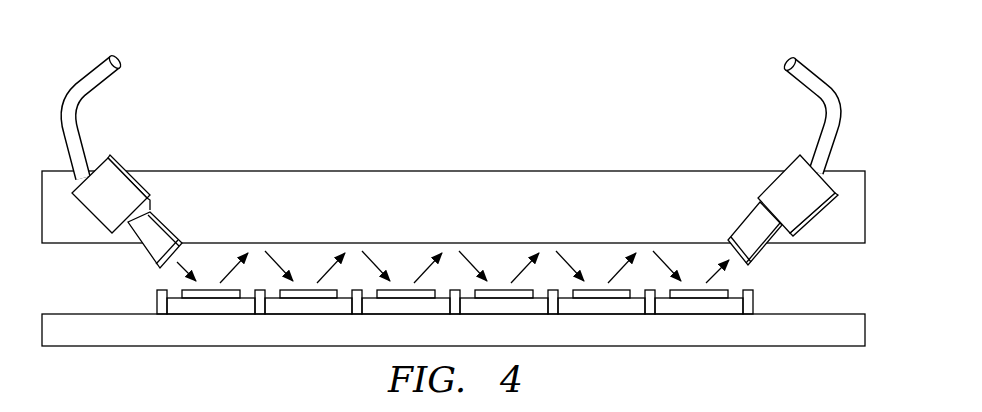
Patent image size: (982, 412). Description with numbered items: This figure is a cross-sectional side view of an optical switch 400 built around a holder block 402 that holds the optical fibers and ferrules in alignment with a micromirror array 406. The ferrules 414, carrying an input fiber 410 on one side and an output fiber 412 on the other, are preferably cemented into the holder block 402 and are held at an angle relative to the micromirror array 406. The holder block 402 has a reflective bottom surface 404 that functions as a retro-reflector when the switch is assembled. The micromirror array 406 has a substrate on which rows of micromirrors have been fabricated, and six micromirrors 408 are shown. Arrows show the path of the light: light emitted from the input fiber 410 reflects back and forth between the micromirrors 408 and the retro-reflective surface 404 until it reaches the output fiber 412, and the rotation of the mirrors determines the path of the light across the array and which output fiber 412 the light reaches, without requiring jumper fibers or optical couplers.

The optical switch 400 is at (453, 207).
The holder block 402 is at (453, 176).
The reflective bottom surface 404 is at (321, 244).
The micromirror array 406 is at (197, 338).
The micromirrors 408 is at (453, 240).
The input fiber 410 is at (88, 85).
The output fiber 412 is at (822, 84).
The ferrules 414 is at (142, 187).